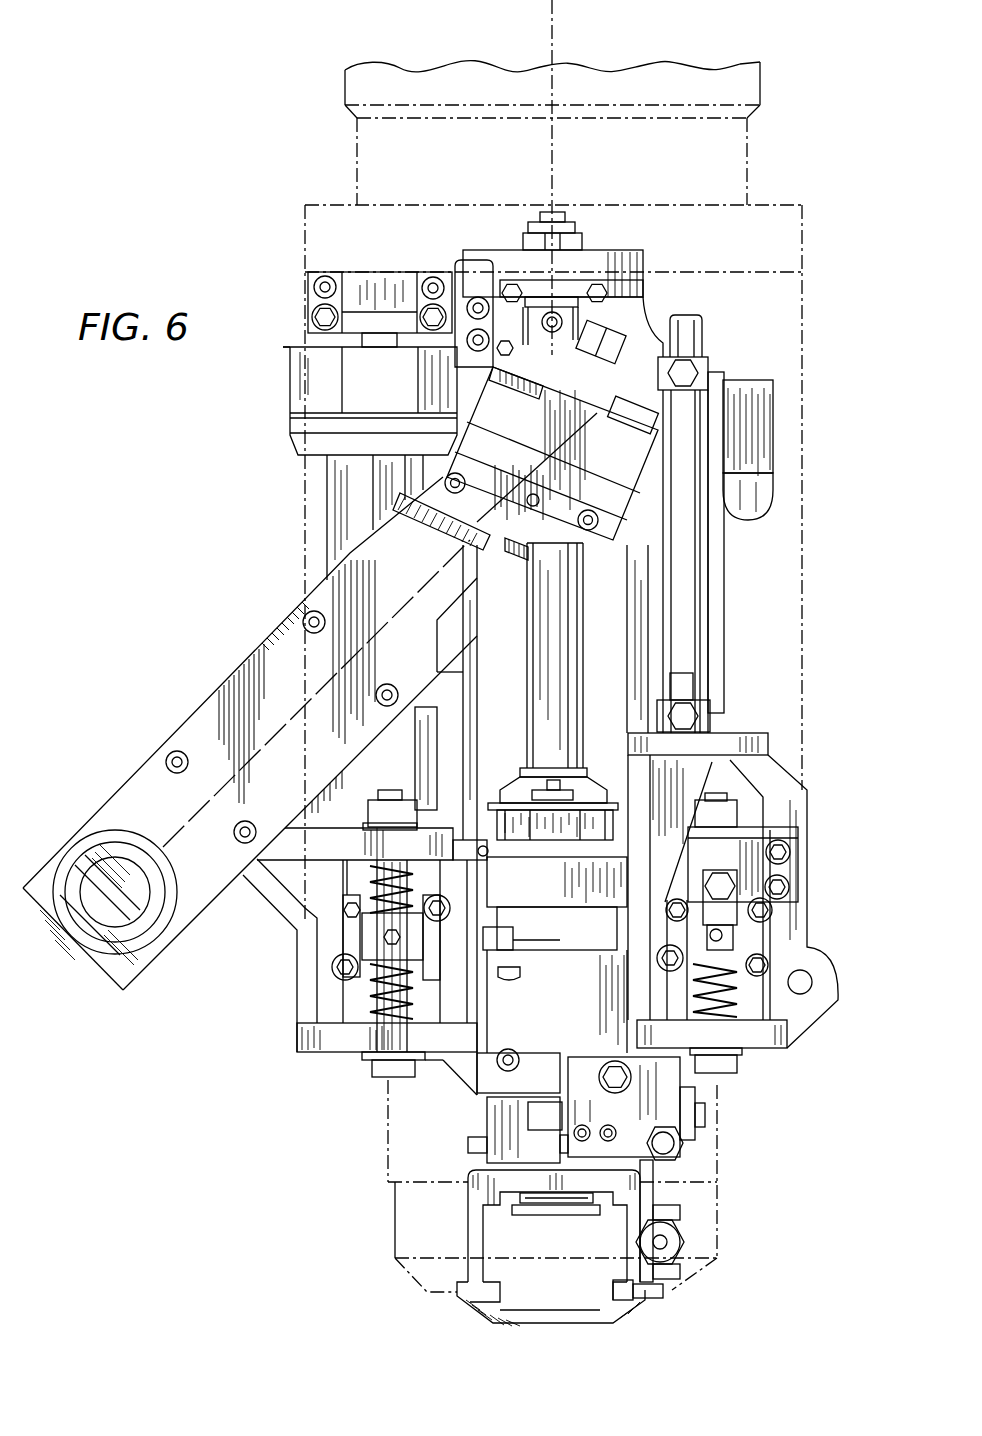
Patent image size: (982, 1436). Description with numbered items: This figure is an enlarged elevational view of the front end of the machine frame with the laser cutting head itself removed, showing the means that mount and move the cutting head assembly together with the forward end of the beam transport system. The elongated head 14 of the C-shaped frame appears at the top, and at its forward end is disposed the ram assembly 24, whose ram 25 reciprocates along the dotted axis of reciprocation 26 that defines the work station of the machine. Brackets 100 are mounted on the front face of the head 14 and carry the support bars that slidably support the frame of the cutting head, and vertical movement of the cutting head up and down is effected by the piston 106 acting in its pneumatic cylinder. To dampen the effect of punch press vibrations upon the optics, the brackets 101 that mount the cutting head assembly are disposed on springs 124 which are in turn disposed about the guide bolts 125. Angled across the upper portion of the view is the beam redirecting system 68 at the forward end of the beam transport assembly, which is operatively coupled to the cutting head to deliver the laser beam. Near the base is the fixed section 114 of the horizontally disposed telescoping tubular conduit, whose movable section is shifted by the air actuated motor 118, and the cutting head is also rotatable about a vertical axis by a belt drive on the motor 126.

The head 14 is at (749, 138).
The ram assembly 24 is at (738, 340).
The ram 25 is at (388, 1195).
The axis of reciprocation 26 is at (560, 32).
The beam redirecting system 68 is at (257, 658).
The brackets 100 is at (345, 937).
The brackets 101 is at (342, 862).
The piston 106 is at (687, 592).
The fixed section 114 is at (587, 1318).
The air actuated motor 118 is at (678, 1240).
The springs 124 is at (372, 988).
The guide bolts 125 is at (357, 1010).
The motor 126 is at (580, 820).